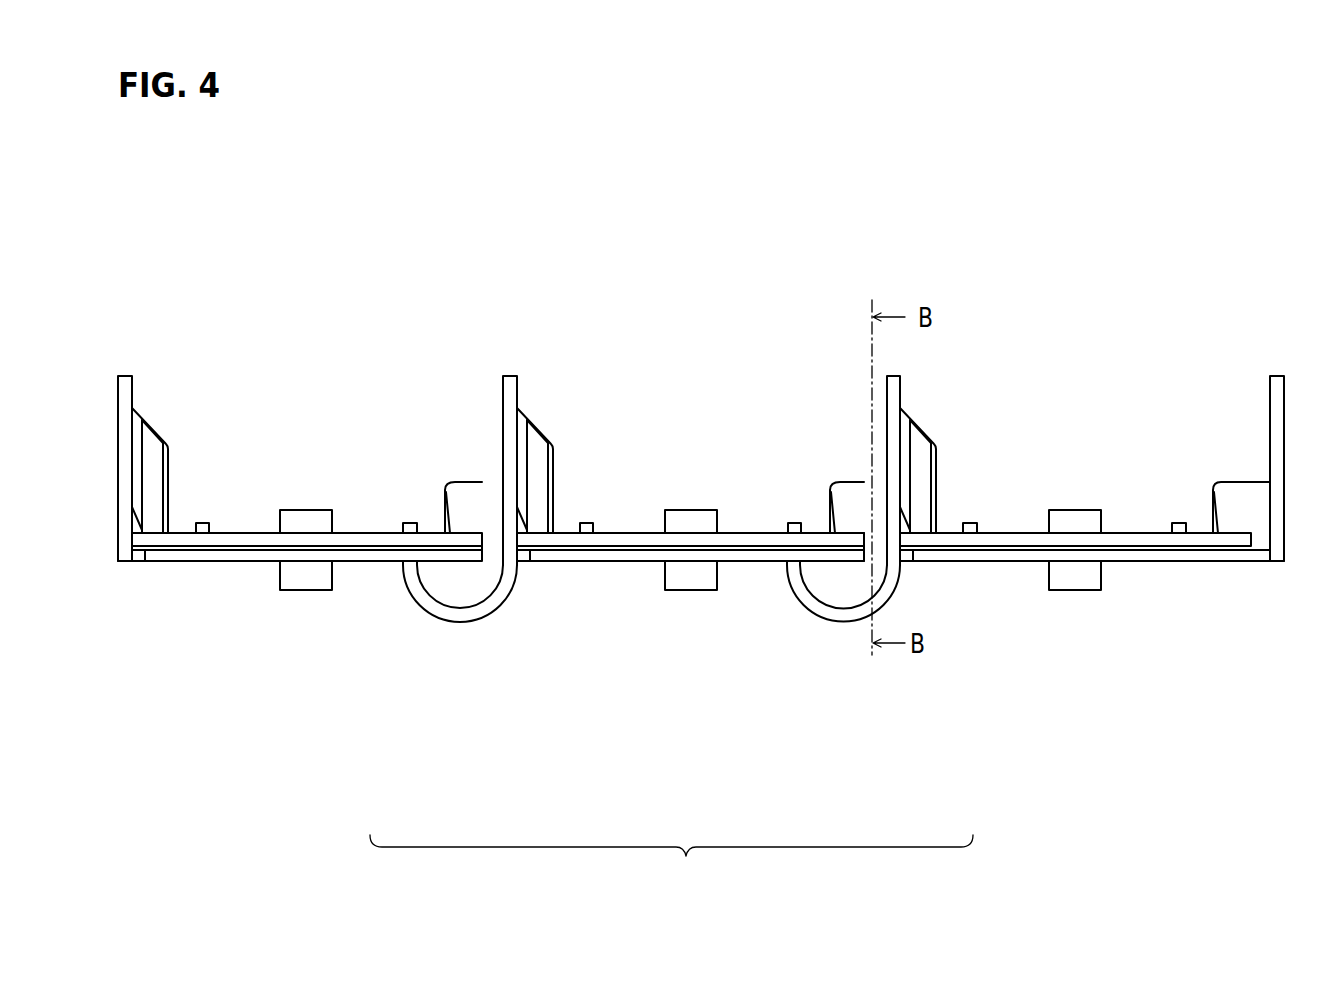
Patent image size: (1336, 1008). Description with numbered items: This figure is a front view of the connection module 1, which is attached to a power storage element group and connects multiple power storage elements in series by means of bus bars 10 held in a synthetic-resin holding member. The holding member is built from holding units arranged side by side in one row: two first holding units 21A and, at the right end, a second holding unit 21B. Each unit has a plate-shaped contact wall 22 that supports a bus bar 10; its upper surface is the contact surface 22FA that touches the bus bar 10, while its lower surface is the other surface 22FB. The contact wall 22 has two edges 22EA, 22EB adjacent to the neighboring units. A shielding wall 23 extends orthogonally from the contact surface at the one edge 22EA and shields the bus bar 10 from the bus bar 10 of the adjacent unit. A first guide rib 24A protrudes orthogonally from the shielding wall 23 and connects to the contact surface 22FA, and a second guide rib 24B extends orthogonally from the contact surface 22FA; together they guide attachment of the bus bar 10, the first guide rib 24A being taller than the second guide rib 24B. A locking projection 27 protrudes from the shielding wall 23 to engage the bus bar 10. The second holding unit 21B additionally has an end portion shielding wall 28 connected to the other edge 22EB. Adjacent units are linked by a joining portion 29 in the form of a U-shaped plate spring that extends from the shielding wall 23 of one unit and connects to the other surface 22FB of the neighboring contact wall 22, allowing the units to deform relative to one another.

The connection module 1 is at (987, 173).
The bus bar 10 is at (367, 535).
The first holding unit 21A is at (377, 623).
The second holding unit 21B is at (1004, 652).
The contact wall 22 is at (573, 556).
The one edge of the contact wall 22EA is at (513, 552).
The other edge of the contact wall 22EB is at (865, 551).
The contact surface 22FA is at (645, 532).
The other surface of the contact wall 22FB is at (759, 574).
The shielding wall 23 is at (508, 380).
The first guide rib 24A is at (542, 465).
The second guide rib 24B is at (847, 497).
The locking projection 27 is at (522, 527).
The end portion shielding wall 28 is at (1278, 391).
The joining portion 29 is at (465, 617).